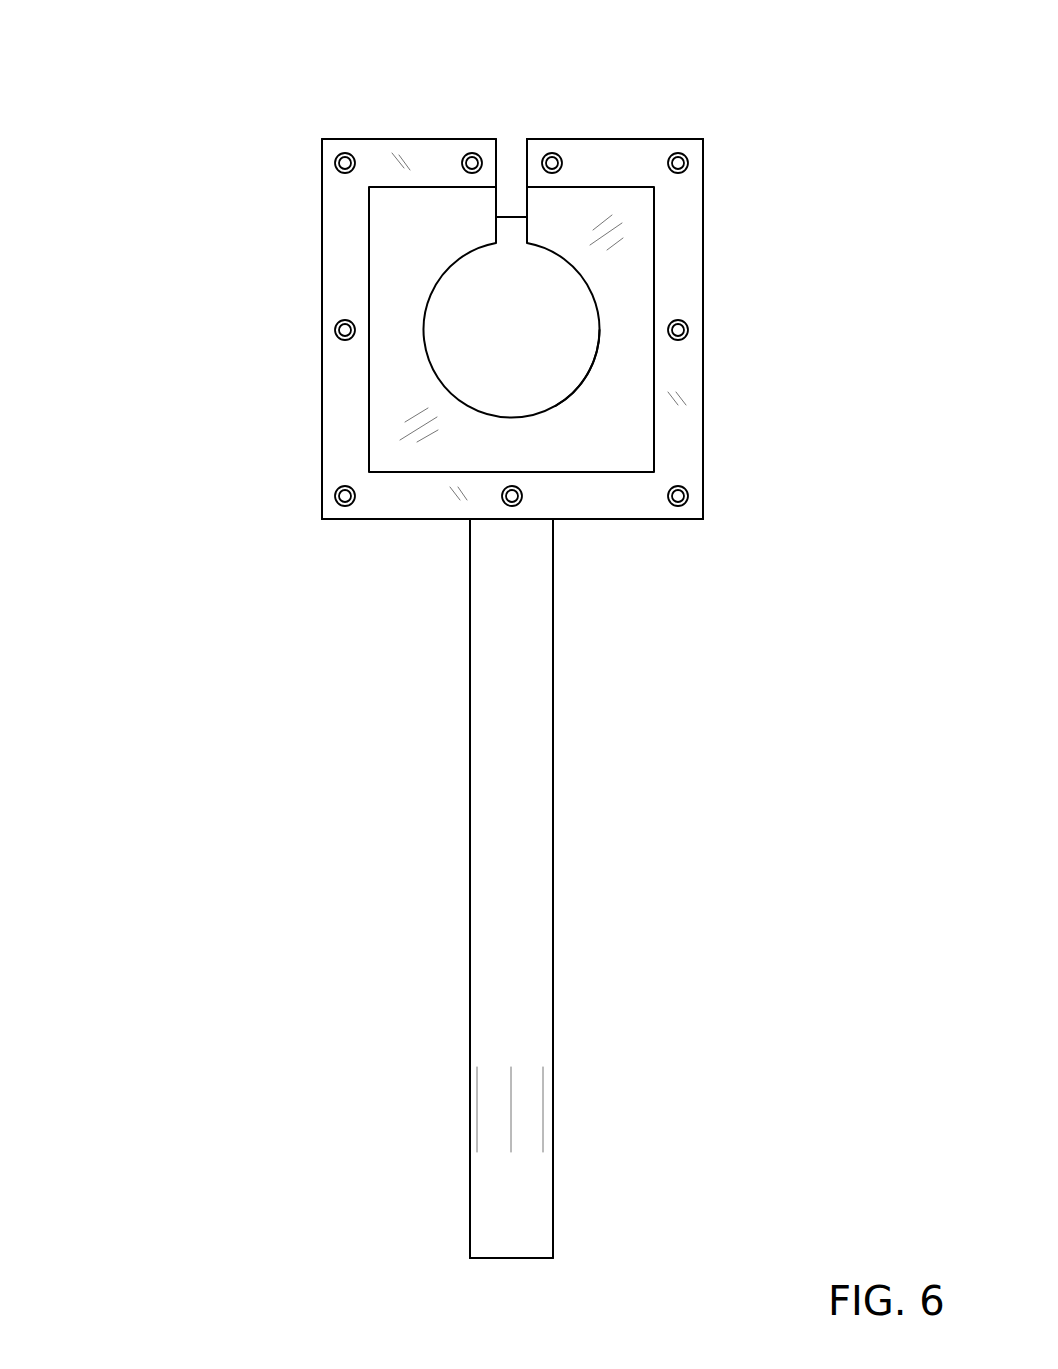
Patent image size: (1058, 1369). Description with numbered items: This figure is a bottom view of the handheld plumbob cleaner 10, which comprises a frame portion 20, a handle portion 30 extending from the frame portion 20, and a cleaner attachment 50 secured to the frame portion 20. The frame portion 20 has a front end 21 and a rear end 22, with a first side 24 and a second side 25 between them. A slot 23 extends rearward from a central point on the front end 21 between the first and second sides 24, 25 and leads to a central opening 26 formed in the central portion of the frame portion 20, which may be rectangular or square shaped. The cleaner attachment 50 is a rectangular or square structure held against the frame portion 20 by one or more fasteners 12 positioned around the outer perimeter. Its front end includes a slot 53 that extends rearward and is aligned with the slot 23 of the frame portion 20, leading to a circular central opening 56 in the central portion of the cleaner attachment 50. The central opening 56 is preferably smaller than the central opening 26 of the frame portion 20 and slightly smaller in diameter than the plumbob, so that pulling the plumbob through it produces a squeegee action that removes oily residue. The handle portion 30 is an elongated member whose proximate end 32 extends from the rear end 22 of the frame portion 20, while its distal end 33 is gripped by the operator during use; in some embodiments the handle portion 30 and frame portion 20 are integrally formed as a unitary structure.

The handheld plumbob cleaner 10 is at (152, 122).
The fasteners 12 is at (688, 164).
The frame portion 20 is at (726, 247).
The front end 21 is at (617, 139).
The rear end 22 is at (597, 520).
The slot 23 is at (497, 160).
The first side 24 is at (703, 433).
The second side 25 is at (322, 417).
The central opening 26 is at (420, 188).
The handle portion 30 is at (445, 913).
The proximate end 32 is at (470, 548).
The distal end 33 is at (508, 1258).
The cleaner attachment 50 is at (620, 303).
The slot 53 is at (496, 217).
The central opening 56 is at (592, 368).